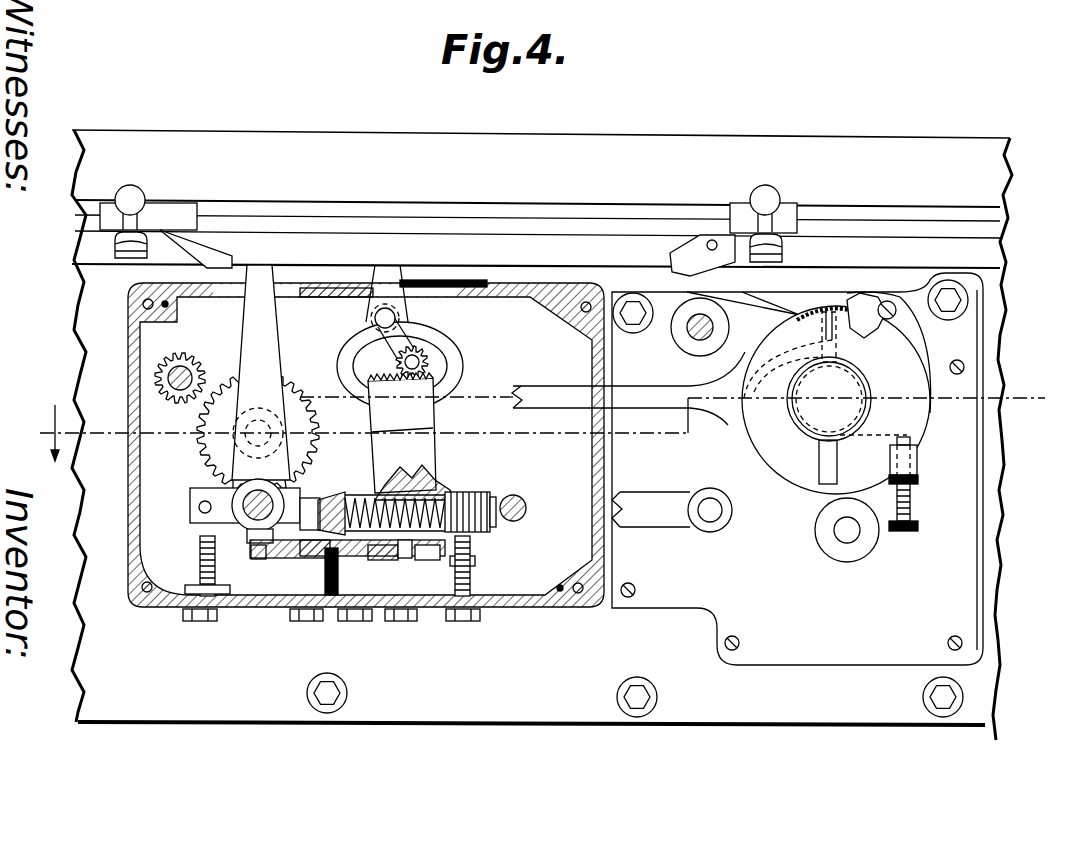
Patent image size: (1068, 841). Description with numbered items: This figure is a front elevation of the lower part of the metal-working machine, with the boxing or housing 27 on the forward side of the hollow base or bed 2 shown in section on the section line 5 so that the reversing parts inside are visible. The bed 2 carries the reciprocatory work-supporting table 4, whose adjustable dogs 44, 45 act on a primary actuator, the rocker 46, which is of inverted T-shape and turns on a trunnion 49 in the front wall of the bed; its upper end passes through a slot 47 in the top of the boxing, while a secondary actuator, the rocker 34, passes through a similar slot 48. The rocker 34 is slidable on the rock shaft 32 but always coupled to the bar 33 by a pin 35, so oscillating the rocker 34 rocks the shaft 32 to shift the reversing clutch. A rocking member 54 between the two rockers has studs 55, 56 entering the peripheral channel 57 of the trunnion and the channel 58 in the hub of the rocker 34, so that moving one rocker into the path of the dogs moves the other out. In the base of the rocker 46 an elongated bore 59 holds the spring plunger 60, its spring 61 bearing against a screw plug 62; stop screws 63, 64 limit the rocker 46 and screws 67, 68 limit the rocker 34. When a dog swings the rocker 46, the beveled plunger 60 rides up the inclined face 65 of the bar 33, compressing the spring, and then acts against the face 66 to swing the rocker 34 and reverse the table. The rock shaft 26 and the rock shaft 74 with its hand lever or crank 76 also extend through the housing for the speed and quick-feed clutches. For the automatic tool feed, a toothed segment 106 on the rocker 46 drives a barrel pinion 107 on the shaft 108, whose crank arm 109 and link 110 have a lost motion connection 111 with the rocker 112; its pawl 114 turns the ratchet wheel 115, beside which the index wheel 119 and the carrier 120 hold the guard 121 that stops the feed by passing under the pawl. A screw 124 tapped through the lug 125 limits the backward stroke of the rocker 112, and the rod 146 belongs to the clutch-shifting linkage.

The hollow base or bed 2 is at (1000, 258).
The reciprocatory work-supporting table 4 is at (536, 213).
The section line 5 is at (529, 422).
The rock shaft 26 is at (519, 504).
The boxing or housing 27 is at (128, 386).
The rock shaft 32 is at (262, 535).
The bar 33 is at (205, 505).
The rocker 34 is at (258, 330).
The pin 35 is at (200, 510).
The adjustable dog 44 is at (688, 255).
The adjustable dog 45 is at (205, 243).
The rocker 46 is at (464, 362).
The slot 47 is at (428, 295).
The slot 48 is at (283, 292).
The trunnion 49 is at (388, 490).
The rocking member 54 is at (316, 592).
The stud 55 is at (410, 558).
The stud 56 is at (258, 548).
The peripheral channel 57 is at (426, 558).
The channel 58 is at (243, 512).
The elongated bore 59 is at (470, 571).
The spring plunger 60 is at (332, 500).
The spring 61 is at (440, 498).
The screw plug 62 is at (492, 505).
The screw 63 is at (467, 560).
The screw 64 is at (385, 561).
The inclined face 65 is at (300, 541).
The inclined face 66 is at (310, 505).
The screw 67 is at (300, 560).
The screw 68 is at (200, 565).
The rock shaft 74 is at (712, 522).
The hand lever or crank 76 is at (672, 510).
The toothed segment 106 is at (392, 374).
The pinion 107 is at (393, 325).
The shaft 108 is at (418, 364).
The crank arm 109 is at (383, 332).
The link 110 is at (522, 388).
The lost motion connection 111 is at (846, 352).
The rocker 112 is at (922, 351).
The pawl 114 is at (868, 300).
The ratchet wheel 115 is at (895, 318).
The index wheel 119 is at (900, 386).
The carrier 120 is at (825, 345).
The guard 121 is at (815, 312).
The screw 124 is at (912, 506).
The lug 125 is at (917, 462).
The rod 146 is at (700, 330).